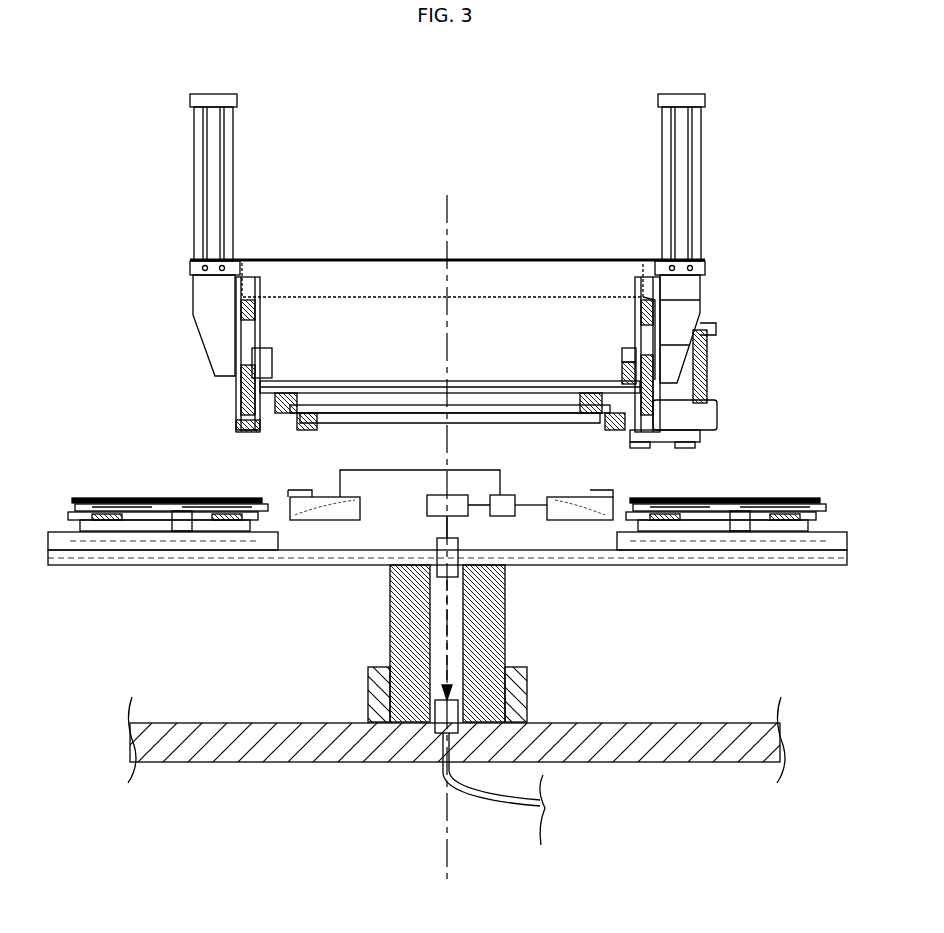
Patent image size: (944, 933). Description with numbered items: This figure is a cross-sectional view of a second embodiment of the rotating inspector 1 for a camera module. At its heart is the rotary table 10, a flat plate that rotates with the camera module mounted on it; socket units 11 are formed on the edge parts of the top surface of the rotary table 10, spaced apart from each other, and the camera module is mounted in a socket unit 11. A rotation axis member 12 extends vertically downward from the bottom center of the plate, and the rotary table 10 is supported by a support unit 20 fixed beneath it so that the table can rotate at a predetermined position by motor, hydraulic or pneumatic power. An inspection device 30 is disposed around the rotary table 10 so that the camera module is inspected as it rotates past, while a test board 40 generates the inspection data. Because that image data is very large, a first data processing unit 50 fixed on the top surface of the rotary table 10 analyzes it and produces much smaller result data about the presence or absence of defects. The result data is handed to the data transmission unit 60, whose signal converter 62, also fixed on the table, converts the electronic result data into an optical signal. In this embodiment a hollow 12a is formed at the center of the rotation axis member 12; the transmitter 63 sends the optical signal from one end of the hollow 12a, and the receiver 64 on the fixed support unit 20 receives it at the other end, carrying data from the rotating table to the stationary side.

The rotating inspector 1 is at (757, 196).
The rotary table 10 is at (793, 566).
The socket unit 11 is at (133, 498).
The rotation axis member 12 is at (497, 598).
The hollow 12a is at (440, 631).
The support unit 20 is at (711, 723).
The inspection device 30 is at (484, 264).
The test board 40 is at (573, 492).
The first data processing unit 50 is at (502, 495).
The data transmission unit 60 is at (427, 494).
The signal converter 62 is at (460, 495).
The transmitter 63 is at (425, 561).
The receiver 64 is at (456, 700).